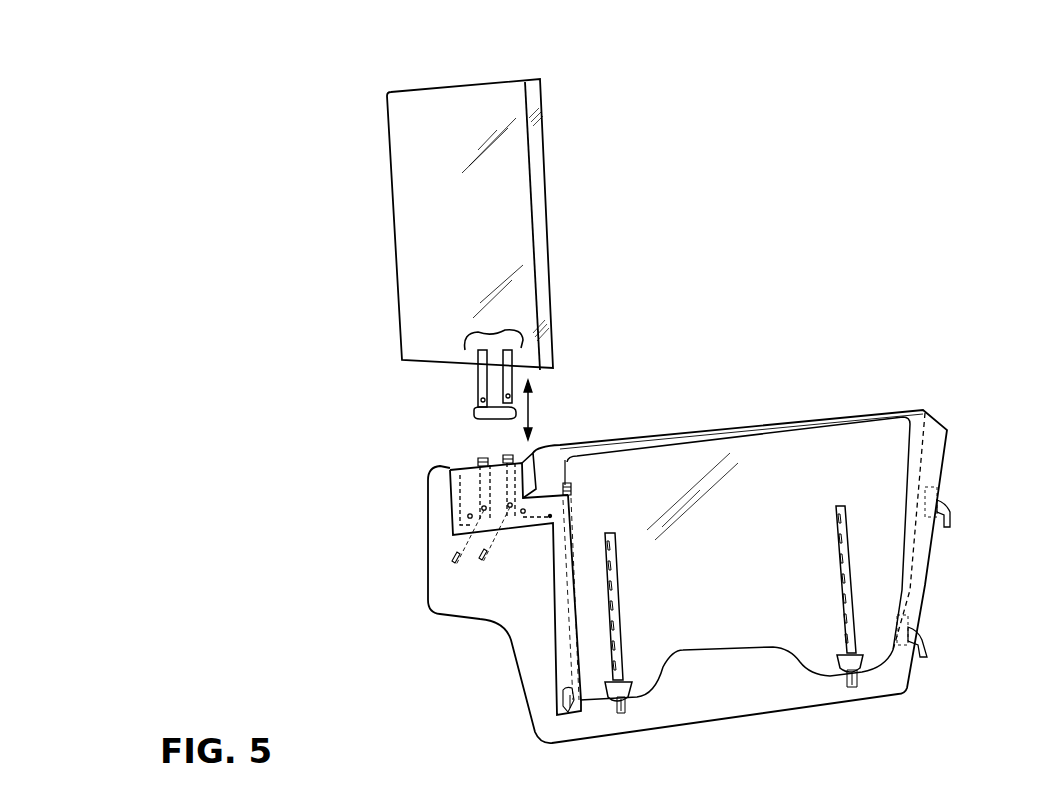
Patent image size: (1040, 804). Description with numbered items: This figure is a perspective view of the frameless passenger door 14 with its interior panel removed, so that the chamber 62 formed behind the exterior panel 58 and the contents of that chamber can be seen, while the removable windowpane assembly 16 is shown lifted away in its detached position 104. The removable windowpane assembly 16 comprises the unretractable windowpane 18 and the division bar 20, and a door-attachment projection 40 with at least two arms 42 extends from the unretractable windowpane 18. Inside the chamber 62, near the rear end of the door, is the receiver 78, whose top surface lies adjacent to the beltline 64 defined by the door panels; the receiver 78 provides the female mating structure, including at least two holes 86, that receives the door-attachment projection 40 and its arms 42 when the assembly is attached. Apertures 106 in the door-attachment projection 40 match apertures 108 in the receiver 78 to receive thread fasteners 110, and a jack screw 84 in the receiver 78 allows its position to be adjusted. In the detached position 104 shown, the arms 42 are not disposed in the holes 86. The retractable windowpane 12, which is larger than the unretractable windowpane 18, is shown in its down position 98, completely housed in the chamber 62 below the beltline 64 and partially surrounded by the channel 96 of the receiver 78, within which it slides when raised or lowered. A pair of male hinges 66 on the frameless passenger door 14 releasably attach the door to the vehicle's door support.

The retractable windowpane 12 is at (673, 468).
The frameless passenger door 14 is at (308, 268).
The removable windowpane assembly 16 is at (378, 110).
The unretractable windowpane 18 is at (423, 217).
The division bar 20 is at (533, 90).
The door-attachment projection 40 is at (495, 416).
The arms 42 is at (506, 384).
The exterior panel 58 is at (422, 536).
The chamber 62 is at (520, 594).
The beltline 64 is at (752, 428).
The male hinges 66 is at (947, 517).
The receiver 78 is at (570, 697).
The jack screw 84 is at (470, 516).
The holes 86 is at (505, 457).
The channel 96 is at (562, 485).
The down position 98 is at (912, 450).
The detached position 104 is at (433, 330).
The apertures 106 is at (482, 402).
The apertures 108 is at (482, 508).
The thread fasteners 110 is at (455, 565).